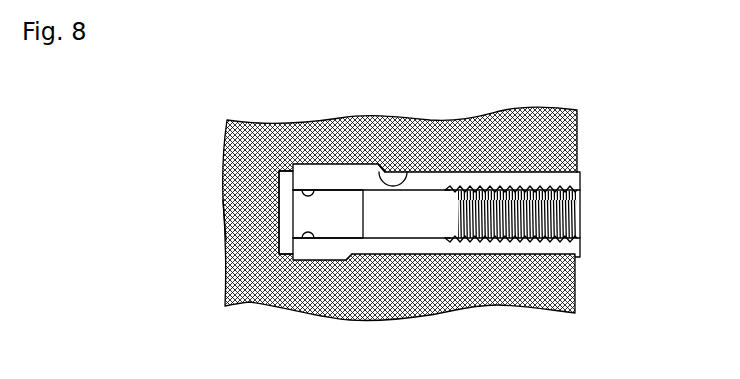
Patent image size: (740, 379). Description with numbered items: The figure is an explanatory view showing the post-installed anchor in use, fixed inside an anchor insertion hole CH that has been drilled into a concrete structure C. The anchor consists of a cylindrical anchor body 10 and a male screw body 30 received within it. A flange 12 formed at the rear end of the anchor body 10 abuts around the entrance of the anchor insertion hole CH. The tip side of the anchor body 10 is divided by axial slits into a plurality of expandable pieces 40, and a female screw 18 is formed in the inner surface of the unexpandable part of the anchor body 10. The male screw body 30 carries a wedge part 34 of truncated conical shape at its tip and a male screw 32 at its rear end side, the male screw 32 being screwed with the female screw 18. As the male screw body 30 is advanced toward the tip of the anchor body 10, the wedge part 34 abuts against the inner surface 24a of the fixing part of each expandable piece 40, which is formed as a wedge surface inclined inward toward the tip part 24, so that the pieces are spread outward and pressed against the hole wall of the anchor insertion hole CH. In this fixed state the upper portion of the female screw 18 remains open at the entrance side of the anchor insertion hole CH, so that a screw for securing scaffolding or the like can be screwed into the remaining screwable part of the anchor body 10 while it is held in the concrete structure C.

The anchor body 10 is at (580, 173).
The flange 12 is at (581, 258).
The female screw 18 is at (582, 201).
The tip part 24 is at (291, 190).
The inner surface 24a is at (303, 187).
The male screw body 30 is at (415, 217).
The male screw 32 is at (470, 243).
The wedge part 34 is at (335, 226).
The expandable piece 40 is at (360, 182).
The anchor insertion hole CH is at (384, 171).
The concrete structure C is at (240, 215).